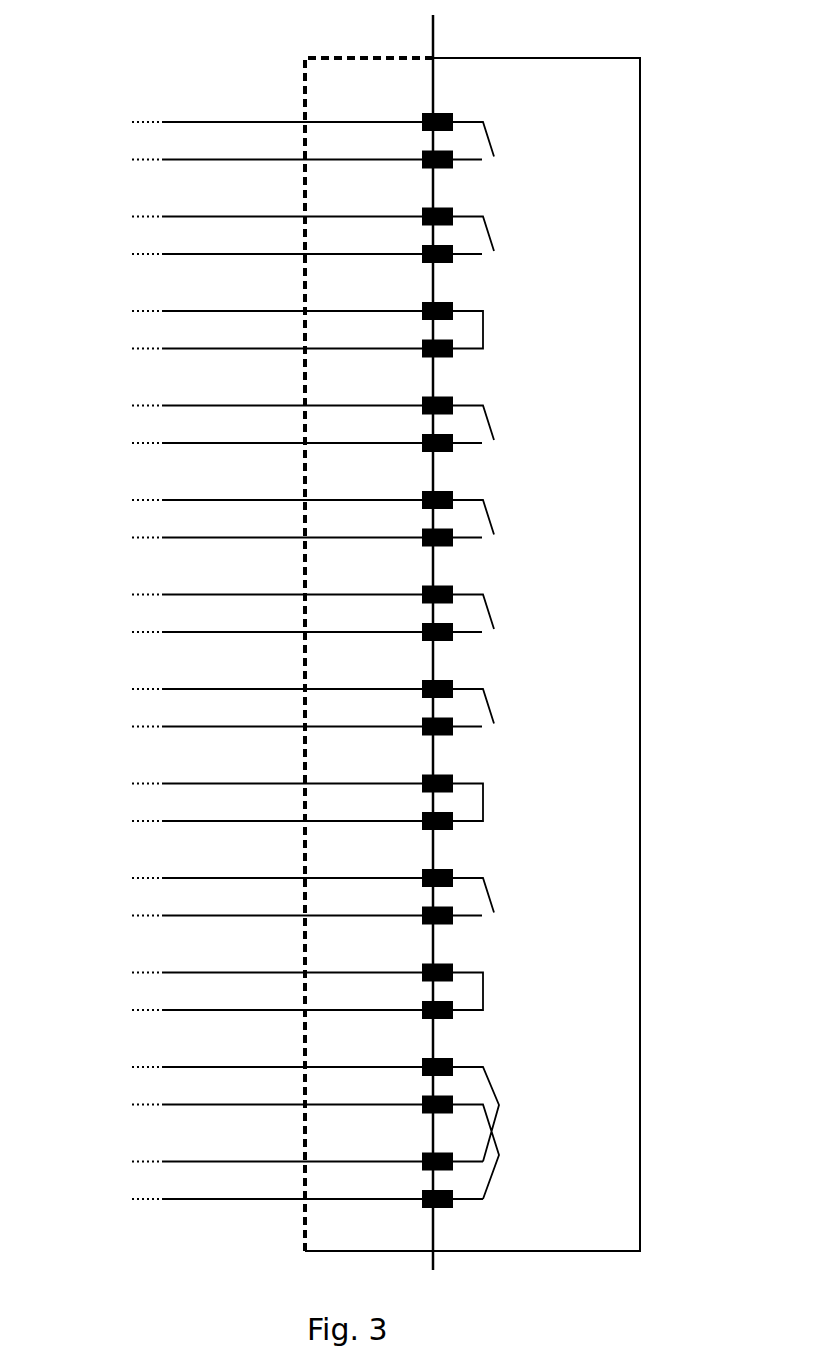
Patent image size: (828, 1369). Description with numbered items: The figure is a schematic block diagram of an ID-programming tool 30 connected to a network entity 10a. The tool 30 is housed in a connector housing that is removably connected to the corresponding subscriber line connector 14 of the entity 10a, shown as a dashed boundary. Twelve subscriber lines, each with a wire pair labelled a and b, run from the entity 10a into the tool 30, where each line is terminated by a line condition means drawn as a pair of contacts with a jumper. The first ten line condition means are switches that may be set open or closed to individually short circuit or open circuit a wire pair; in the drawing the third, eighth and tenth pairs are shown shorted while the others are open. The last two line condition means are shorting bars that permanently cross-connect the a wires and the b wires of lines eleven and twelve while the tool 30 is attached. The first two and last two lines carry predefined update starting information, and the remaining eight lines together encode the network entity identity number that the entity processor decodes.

The network entity 10a is at (227, 21).
The subscriber line connector 14 is at (383, 55).
The ID-programming tool 30 is at (640, 185).